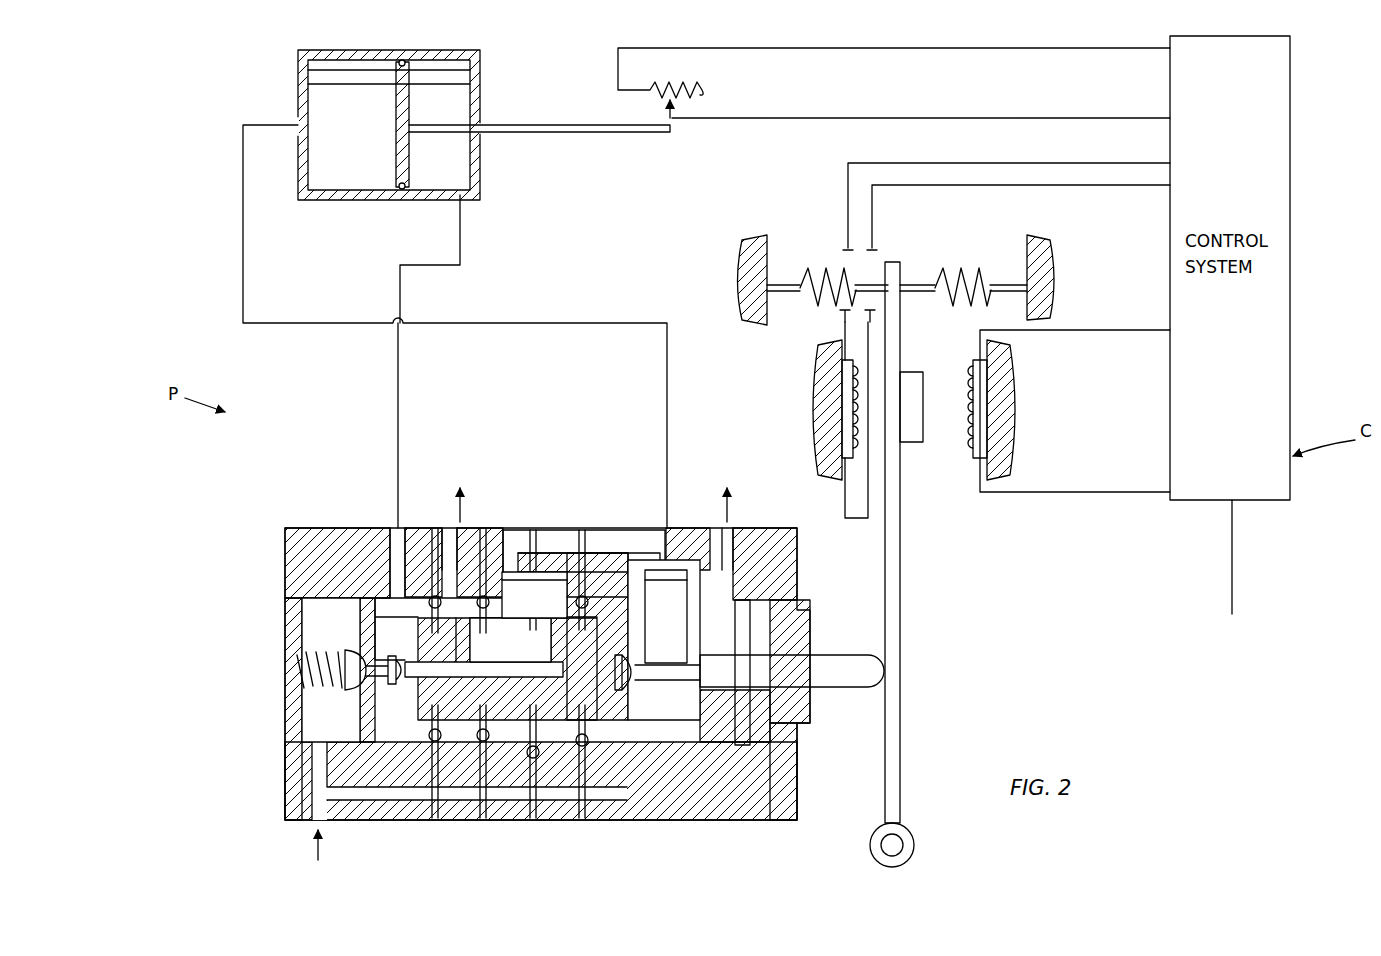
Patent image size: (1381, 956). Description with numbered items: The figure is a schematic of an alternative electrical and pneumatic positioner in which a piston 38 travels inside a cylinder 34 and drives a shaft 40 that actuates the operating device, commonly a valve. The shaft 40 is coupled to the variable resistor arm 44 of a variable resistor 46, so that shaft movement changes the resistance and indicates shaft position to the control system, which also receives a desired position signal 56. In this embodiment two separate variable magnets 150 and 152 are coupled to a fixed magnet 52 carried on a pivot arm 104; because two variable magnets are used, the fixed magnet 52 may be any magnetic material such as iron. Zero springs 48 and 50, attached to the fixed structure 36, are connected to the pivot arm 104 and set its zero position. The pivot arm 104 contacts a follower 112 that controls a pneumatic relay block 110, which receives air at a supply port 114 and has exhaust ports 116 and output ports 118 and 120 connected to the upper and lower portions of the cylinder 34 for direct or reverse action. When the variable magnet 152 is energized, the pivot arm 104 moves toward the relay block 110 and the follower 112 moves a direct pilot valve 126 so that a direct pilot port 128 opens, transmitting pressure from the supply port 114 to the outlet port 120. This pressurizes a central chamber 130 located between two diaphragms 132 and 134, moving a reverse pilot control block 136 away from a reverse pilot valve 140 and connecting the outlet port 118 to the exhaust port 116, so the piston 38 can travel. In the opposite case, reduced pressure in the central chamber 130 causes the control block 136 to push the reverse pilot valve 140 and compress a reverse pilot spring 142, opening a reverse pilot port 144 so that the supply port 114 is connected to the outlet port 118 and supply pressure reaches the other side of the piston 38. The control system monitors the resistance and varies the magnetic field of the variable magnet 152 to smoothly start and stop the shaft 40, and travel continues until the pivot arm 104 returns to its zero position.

The cylinder 34 is at (348, 78).
The fixed structure 36 is at (740, 284).
The piston 38 is at (406, 82).
The shaft 40 is at (556, 123).
The variable resistor arm 44 is at (673, 124).
The variable resistor 46 is at (693, 90).
The zero spring 48 is at (966, 272).
The zero spring 50 is at (815, 272).
The fixed magnet 52 is at (918, 444).
The desired position signal 56 is at (1234, 568).
The pivot arm 104 is at (901, 722).
The pneumatic relay block 110 is at (768, 826).
The follower 112 is at (845, 690).
The supply port 114 is at (315, 824).
The exhaust port 116 is at (452, 524).
The output port 118 is at (392, 522).
The output port 120 is at (658, 527).
The direct pilot valve 126 is at (670, 690).
The direct pilot port 128 is at (652, 663).
The central chamber 130 is at (520, 570).
The diaphragm 132 is at (490, 526).
The diaphragm 134 is at (556, 570).
The reverse pilot control block 136 is at (578, 612).
The reverse pilot valve 140 is at (348, 655).
The reverse pilot spring 142 is at (298, 662).
The reverse pilot port 144 is at (388, 650).
The variable magnet 150 is at (975, 358).
The variable magnet 152 is at (848, 345).